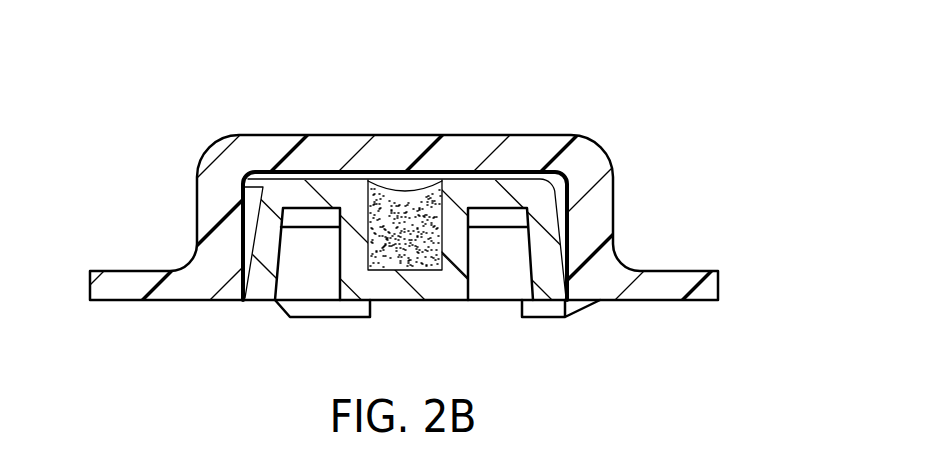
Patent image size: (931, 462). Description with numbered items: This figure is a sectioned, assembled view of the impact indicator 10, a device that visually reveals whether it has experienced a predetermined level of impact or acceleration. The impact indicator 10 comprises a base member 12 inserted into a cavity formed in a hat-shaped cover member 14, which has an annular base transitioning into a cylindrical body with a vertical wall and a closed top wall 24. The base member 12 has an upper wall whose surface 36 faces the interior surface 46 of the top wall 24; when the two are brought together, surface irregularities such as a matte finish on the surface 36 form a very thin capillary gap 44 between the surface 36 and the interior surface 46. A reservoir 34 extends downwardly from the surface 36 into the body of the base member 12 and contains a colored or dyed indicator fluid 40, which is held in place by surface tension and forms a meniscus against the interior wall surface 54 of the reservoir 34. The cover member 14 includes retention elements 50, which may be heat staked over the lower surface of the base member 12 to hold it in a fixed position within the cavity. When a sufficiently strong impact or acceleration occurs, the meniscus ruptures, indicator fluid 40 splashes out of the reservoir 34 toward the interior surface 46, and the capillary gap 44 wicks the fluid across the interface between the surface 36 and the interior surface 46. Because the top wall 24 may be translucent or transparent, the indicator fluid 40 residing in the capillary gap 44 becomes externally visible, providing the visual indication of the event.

The impact indicator 10 is at (172, 81).
The base member 12 is at (256, 299).
The cover member 14 is at (720, 288).
The top wall 24 is at (428, 135).
The reservoir 34 is at (425, 270).
The surface 36 is at (512, 174).
The indicator fluid 40 is at (385, 193).
The capillary gap 44 is at (555, 180).
The interior surface 46 is at (290, 172).
The retention elements 50 is at (542, 317).
The interior wall surface 54 is at (442, 255).